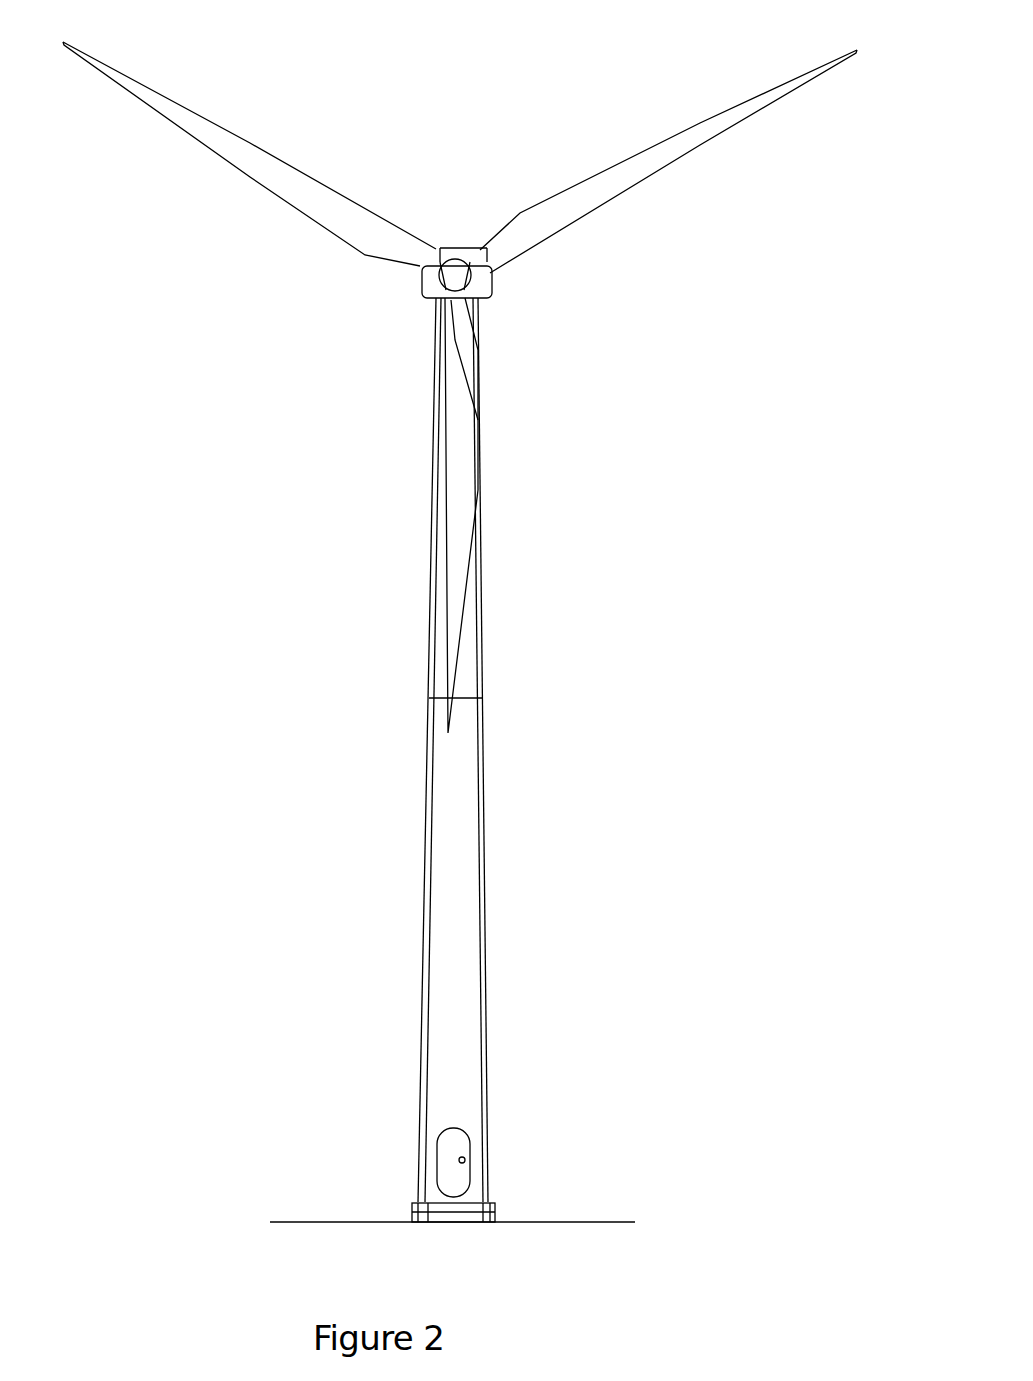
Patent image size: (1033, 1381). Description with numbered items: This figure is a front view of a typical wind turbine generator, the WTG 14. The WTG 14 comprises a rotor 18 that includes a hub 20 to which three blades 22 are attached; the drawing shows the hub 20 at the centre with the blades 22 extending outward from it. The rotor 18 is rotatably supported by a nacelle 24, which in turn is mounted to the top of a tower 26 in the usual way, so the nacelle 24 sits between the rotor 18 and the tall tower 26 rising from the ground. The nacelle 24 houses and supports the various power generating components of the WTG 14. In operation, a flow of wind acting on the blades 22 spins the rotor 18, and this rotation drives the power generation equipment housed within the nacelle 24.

The WTG 14 is at (342, 603).
The rotor 18 is at (342, 346).
The hub 20 is at (452, 262).
The blades 22 is at (328, 188).
The nacelle 24 is at (490, 297).
The tower 26 is at (480, 745).